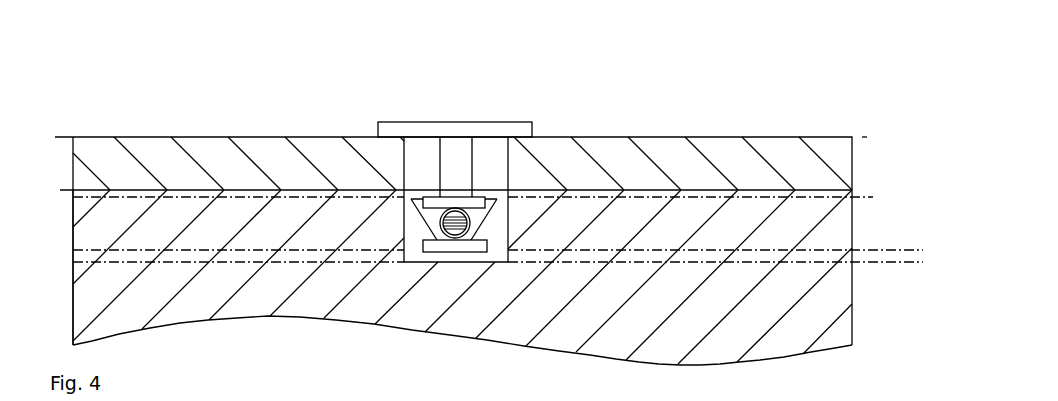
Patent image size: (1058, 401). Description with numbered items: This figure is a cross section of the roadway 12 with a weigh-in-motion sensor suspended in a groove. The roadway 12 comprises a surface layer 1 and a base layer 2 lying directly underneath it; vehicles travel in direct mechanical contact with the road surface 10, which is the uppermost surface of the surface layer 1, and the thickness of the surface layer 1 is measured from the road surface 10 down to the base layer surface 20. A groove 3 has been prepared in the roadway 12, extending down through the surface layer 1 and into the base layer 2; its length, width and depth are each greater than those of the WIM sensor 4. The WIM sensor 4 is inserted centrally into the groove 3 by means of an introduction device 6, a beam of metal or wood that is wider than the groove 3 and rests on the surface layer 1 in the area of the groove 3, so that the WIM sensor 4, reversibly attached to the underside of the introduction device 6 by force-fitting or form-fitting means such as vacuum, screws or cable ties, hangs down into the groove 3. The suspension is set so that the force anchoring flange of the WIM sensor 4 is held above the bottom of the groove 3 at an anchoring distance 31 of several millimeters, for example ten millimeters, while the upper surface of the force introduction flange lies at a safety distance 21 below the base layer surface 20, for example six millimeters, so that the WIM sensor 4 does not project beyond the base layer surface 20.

The road surface 10 is at (73, 137).
The roadway 12 is at (755, 76).
The surface layer 1 is at (680, 172).
The base layer 2 is at (738, 218).
The base layer surface 20 is at (60, 192).
The groove 3 is at (422, 155).
The WIM sensor 4 is at (482, 202).
The introduction device 6 is at (437, 136).
The safety distance 21 is at (870, 155).
The anchoring distance 31 is at (918, 215).